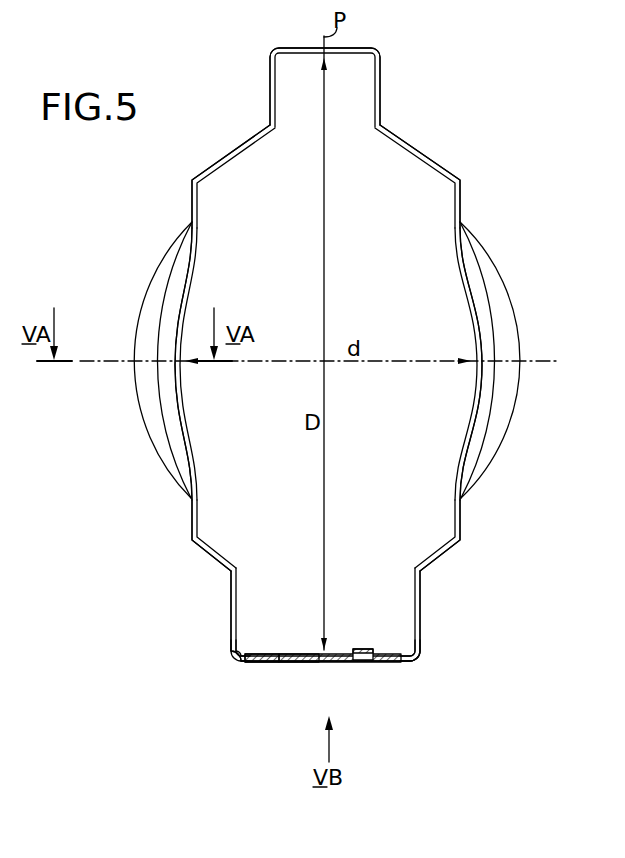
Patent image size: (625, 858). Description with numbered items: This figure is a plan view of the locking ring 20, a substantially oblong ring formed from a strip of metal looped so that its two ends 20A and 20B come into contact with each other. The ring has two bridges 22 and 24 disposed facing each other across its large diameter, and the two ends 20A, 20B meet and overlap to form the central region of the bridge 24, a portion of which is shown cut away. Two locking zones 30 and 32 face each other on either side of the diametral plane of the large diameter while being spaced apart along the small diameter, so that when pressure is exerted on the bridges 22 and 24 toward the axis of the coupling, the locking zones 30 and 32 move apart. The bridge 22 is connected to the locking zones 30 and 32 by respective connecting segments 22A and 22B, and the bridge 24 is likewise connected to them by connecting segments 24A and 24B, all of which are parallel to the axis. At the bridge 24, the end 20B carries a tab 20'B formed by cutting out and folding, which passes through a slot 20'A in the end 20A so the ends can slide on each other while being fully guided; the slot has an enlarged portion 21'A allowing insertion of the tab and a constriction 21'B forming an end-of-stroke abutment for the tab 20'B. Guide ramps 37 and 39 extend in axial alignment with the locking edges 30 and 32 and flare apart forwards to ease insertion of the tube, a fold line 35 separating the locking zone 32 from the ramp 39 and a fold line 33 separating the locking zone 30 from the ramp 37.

The locking ring 20 is at (335, 354).
The bridge 22 is at (380, 84).
The connecting segment 22A is at (412, 136).
The connecting segment 22B is at (221, 161).
The locking zone 30 is at (473, 332).
The locking zone 32 is at (185, 300).
The fold line 33 is at (490, 428).
The fold line 35 is at (158, 336).
The guide ramp 37 is at (503, 313).
The guide ramp 39 is at (161, 277).
The bridge 24 is at (420, 643).
The connecting segment 24A is at (437, 551).
The connecting segment 24B is at (214, 559).
The end of the ring 20A is at (249, 654).
The end of the ring 20B is at (400, 668).
The slot 20'A is at (323, 683).
The tab 20'B is at (371, 626).
The enlarged portion 21'A is at (259, 683).
The constriction 21'B is at (309, 683).